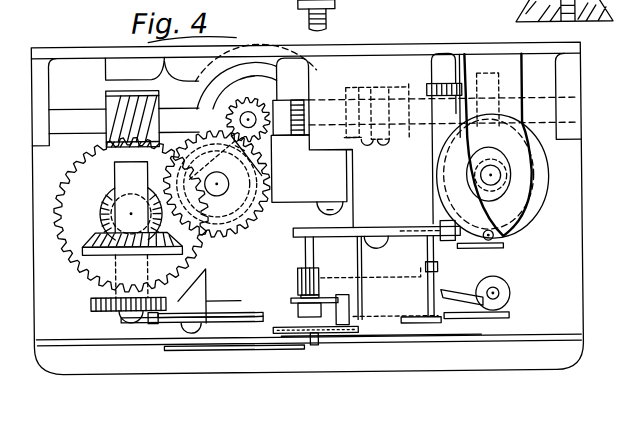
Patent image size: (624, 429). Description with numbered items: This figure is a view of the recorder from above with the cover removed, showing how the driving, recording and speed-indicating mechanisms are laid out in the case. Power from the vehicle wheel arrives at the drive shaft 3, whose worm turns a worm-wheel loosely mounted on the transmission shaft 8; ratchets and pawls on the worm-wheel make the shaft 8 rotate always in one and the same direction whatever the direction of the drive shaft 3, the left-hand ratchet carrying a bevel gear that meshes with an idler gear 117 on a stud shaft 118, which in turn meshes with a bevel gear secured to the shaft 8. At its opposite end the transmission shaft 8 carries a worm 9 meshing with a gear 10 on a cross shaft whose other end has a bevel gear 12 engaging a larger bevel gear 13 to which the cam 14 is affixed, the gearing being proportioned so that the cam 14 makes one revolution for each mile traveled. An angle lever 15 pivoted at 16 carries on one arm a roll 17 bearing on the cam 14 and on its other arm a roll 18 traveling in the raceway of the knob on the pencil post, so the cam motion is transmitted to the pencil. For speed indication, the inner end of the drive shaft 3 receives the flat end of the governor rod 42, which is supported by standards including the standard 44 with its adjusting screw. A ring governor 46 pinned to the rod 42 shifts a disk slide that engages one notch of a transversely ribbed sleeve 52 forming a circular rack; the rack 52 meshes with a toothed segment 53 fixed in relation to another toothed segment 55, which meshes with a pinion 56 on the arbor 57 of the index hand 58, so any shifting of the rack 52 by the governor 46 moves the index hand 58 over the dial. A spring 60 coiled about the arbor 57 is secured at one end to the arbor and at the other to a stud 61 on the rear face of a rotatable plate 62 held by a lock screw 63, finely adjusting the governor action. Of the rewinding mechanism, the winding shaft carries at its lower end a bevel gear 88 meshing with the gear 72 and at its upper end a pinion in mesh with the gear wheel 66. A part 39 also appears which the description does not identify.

The drive shaft 3 is at (340, 6).
The transmission shaft 8 is at (307, 208).
The worm 9 is at (152, 88).
The gear 10 is at (62, 182).
The bevel gear 12 is at (100, 212).
The bevel gear 13 is at (95, 236).
The cam 14 is at (108, 310).
The angle lever 15 is at (236, 307).
The pivot 16 is at (205, 322).
The roll 17 is at (151, 322).
The roll 18 is at (509, 300).
The pinion 39 is at (254, 100).
The governor rod 42 is at (501, 178).
The standard 44 is at (518, 102).
The ring governor 46 is at (527, 220).
The transversely ribbed sleeve 52 is at (504, 248).
The toothed segment 53 is at (486, 243).
The toothed segment 55 is at (345, 257).
The pinion 56 is at (296, 274).
The arbor 57 is at (313, 258).
The index hand 58 is at (245, 348).
The spring 60 is at (303, 307).
The stud 61 is at (348, 310).
The plate 62 is at (334, 340).
The lock screw 63 is at (375, 340).
The gear wheel 66 is at (216, 193).
The gear 72 is at (290, 96).
The bevel gear 88 is at (212, 80).
The idler gear 117 is at (461, 90).
The stud shaft 118 is at (432, 73).